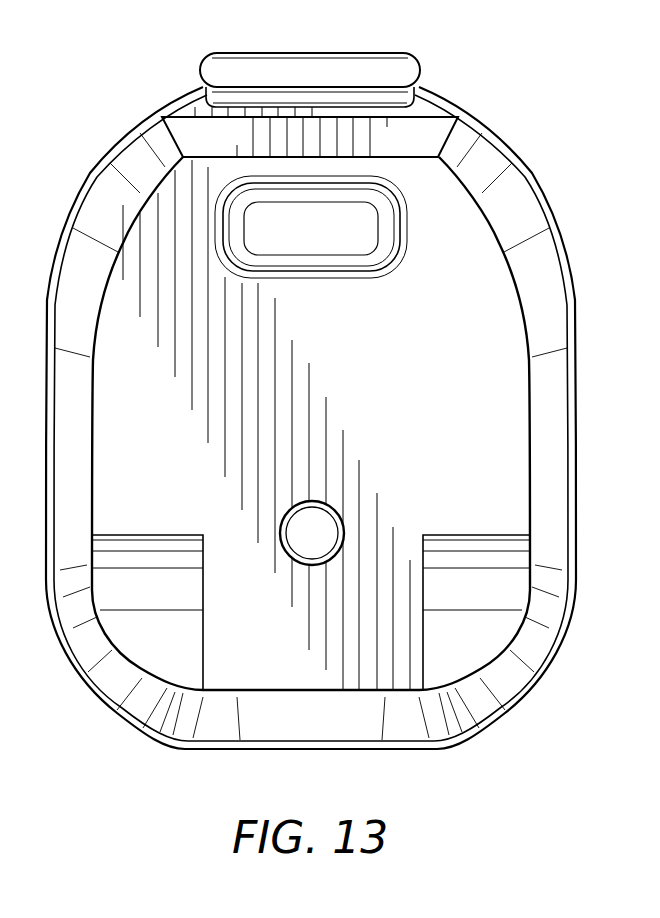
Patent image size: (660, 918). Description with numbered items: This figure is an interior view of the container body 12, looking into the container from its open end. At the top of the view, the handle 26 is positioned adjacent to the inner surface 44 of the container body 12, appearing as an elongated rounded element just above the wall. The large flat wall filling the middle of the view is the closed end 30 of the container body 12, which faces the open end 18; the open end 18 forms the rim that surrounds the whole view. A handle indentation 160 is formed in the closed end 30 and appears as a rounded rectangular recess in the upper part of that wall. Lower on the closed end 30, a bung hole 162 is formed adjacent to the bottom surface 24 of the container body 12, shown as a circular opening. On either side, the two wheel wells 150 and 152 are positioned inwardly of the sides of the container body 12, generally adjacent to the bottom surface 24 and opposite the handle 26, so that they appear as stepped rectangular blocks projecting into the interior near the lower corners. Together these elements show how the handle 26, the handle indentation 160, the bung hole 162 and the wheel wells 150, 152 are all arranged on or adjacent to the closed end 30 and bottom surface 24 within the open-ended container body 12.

The container body 12 is at (533, 245).
The open end 18 is at (515, 165).
The bottom surface 24 is at (328, 724).
The handle 26 is at (230, 72).
The closed end 30 is at (340, 388).
The inner surface 44 is at (423, 107).
The wheel well 150 is at (195, 550).
The wheel well 152 is at (435, 552).
The handle indentation 160 is at (350, 257).
The bung hole 162 is at (318, 537).